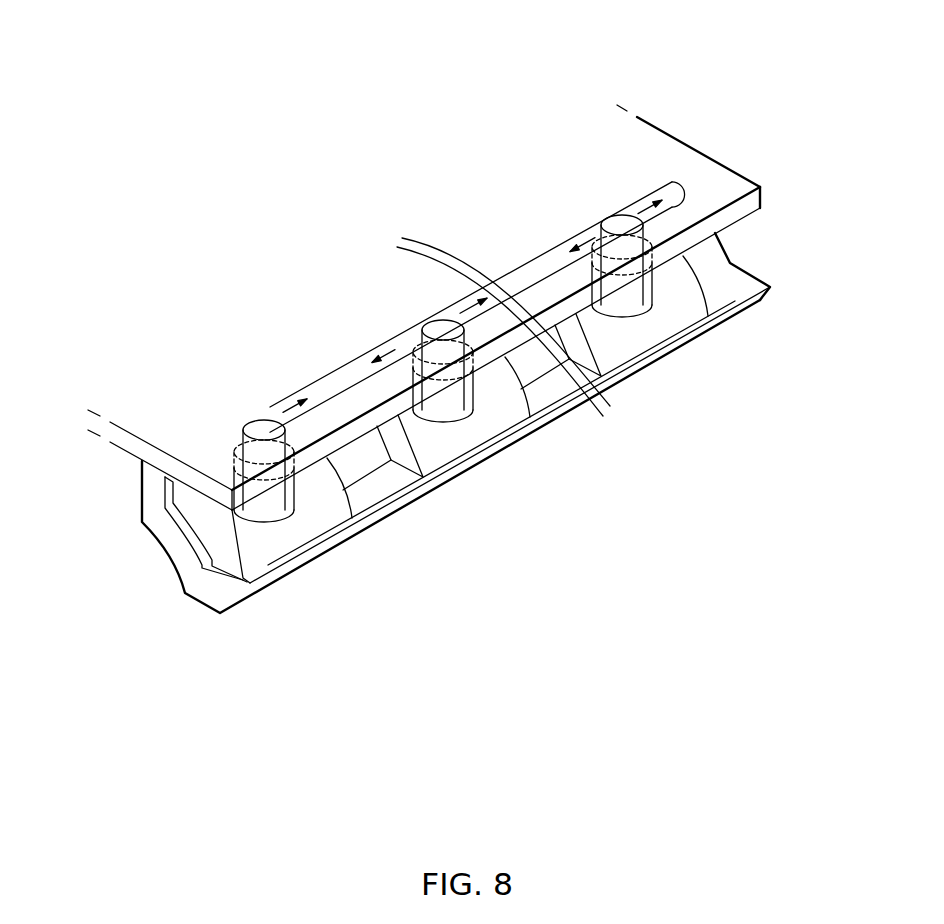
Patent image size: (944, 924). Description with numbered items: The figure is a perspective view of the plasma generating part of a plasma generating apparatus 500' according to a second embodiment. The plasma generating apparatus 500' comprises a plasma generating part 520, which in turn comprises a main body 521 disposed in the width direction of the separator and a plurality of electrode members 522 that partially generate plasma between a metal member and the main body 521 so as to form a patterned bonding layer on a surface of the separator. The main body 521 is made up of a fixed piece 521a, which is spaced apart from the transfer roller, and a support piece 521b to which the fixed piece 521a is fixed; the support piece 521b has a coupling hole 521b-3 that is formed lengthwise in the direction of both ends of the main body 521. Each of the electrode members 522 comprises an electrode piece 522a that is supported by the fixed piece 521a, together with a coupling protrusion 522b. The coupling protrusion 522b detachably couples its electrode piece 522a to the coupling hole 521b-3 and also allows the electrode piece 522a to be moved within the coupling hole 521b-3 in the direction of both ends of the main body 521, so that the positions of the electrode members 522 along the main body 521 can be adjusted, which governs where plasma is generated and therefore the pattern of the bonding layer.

The plasma generating apparatus 500' is at (447, 275).
The plasma generating part 520 is at (456, 506).
The main body 521 is at (456, 484).
The fixed piece 521a is at (198, 590).
The support piece 521b is at (245, 545).
The coupling hole 521b-3 is at (535, 268).
The electrode member 522 is at (501, 496).
The electrode piece 522a is at (303, 527).
The coupling protrusion 522b is at (273, 432).